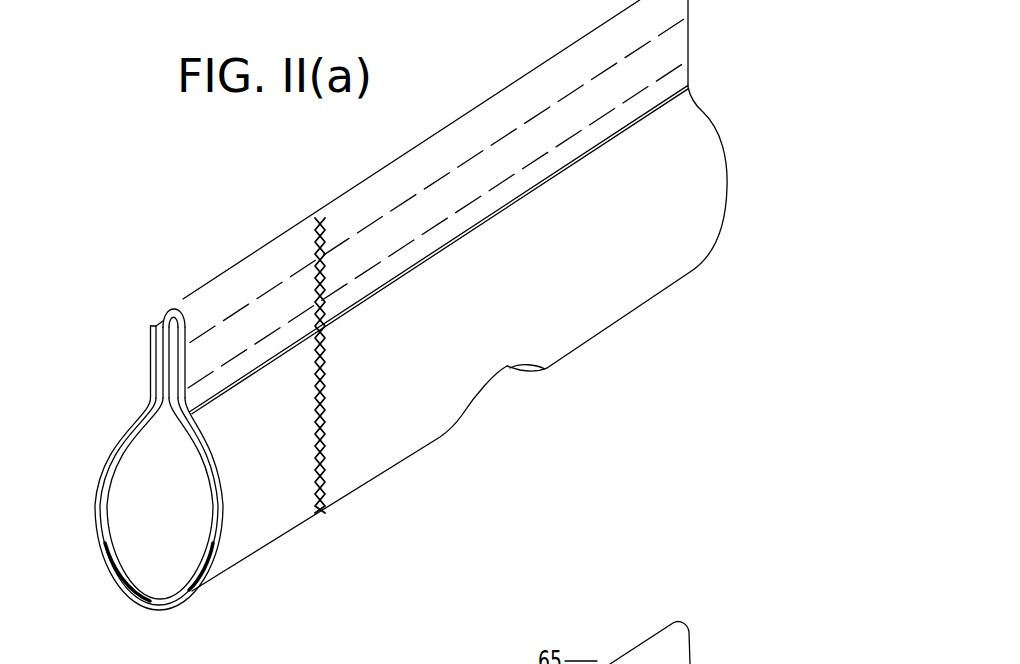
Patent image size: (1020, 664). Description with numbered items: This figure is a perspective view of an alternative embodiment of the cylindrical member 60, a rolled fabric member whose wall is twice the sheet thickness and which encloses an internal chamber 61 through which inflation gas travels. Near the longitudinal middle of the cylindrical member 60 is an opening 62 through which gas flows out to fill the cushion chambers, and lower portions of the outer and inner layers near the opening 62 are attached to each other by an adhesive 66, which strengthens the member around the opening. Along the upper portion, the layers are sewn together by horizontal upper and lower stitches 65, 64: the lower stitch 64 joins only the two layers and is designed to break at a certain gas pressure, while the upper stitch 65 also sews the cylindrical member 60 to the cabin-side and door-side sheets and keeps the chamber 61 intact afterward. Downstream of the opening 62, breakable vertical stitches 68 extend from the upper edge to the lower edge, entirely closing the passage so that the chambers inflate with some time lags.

The cylindrical member 60 is at (284, 187).
The chamber 61 is at (140, 478).
The opening 62 is at (505, 383).
The lower stitch 64 is at (643, 90).
The upper stitch 65 is at (625, 60).
The adhesive 66 is at (108, 550).
The vertical stitches 68 is at (318, 420).